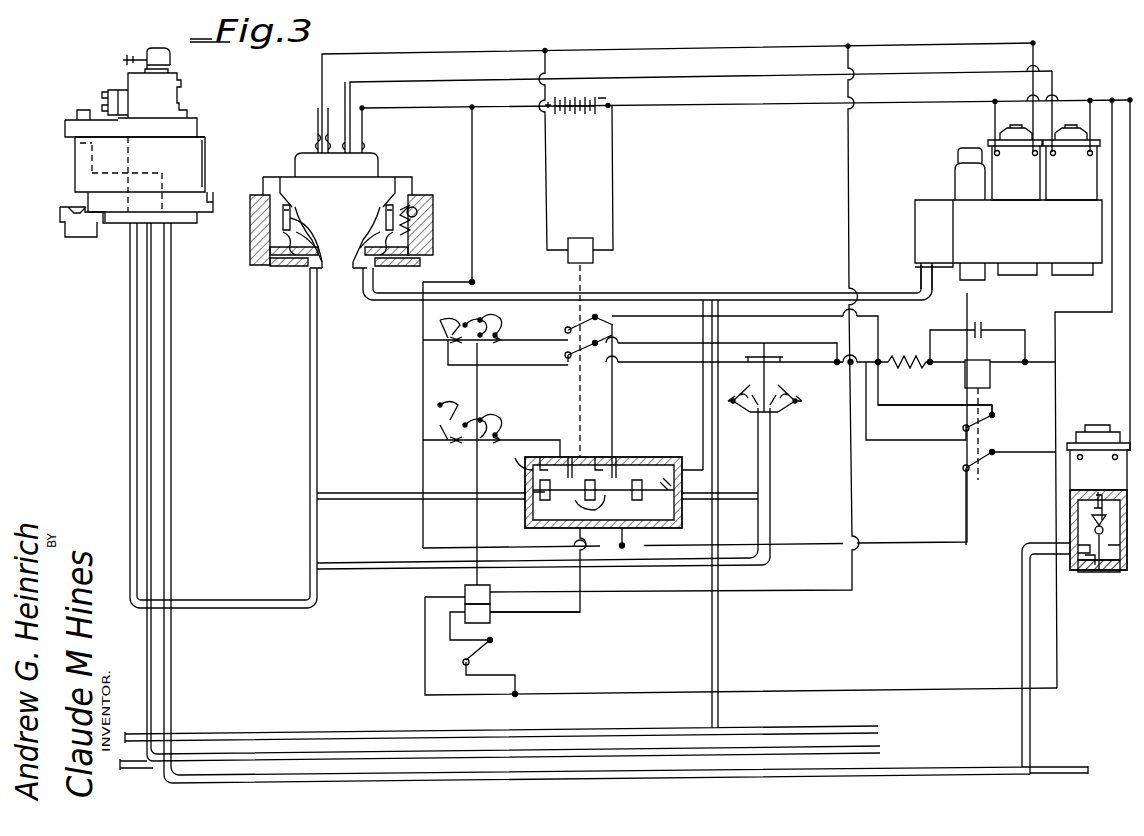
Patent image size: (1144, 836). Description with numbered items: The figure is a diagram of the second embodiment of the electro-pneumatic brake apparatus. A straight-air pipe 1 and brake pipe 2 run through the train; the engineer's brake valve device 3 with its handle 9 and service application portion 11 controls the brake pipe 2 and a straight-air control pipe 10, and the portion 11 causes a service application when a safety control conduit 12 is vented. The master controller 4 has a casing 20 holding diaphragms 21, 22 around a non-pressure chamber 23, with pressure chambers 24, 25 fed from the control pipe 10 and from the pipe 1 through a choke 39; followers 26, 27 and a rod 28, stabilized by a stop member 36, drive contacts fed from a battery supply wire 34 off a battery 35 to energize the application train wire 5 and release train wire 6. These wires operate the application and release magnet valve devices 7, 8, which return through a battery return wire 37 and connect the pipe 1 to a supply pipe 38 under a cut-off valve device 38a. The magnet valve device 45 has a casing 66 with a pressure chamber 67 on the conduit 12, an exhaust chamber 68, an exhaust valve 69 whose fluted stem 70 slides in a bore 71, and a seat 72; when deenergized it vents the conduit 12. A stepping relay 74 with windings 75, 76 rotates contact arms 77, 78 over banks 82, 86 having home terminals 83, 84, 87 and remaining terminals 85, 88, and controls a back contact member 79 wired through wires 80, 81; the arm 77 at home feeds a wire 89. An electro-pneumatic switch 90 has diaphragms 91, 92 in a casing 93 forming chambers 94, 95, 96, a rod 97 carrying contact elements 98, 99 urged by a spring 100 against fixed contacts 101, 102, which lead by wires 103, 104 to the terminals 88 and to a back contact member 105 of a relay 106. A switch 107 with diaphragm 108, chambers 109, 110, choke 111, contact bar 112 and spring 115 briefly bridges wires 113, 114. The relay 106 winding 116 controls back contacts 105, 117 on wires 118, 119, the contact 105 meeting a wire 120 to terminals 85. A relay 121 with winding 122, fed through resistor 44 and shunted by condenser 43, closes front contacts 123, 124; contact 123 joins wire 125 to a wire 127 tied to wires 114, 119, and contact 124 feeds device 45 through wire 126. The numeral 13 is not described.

The straight-air pipe 1 is at (700, 290).
The brake pipe 2 is at (147, 633).
The engineer's automatic brake valve device 3 is at (138, 153).
The electro-pneumatic master controller 4 is at (284, 164).
The application train wire 5 is at (545, 47).
The release train wire 6 is at (715, 78).
The application magnet valve device 7 is at (987, 131).
The release magnet valve device 8 is at (1112, 104).
The handle 9 is at (127, 58).
The straight-air control pipe 10 is at (310, 382).
The service application portion 11 is at (78, 136).
The safety control conduit 12 is at (172, 450).
The port 13 is at (1090, 568).
The sectionalized hollow casing 20 is at (405, 212).
The flexible diaphragm 21 is at (280, 252).
The flexible diaphragm 22 is at (430, 233).
The non-pressure chamber 23 is at (315, 246).
The pressure chamber 24 is at (262, 230).
The pressure chamber 25 is at (428, 248).
The follower 26 is at (296, 217).
The follower 27 is at (390, 215).
The rod 28 is at (318, 225).
The battery supply wire 34 is at (322, 116).
The battery 35 is at (580, 108).
The spring supported stop member 36 is at (420, 216).
The battery return wire 37 is at (612, 182).
The fluid pressure supply pipe 38 is at (918, 272).
The cut-off valve device 38a is at (948, 184).
The choke 39 is at (420, 260).
The condenser 43 is at (983, 325).
The resistor 44 is at (900, 356).
The magnet valve device 45 is at (1062, 482).
The sectionalized casing 66 is at (1102, 505).
The pressure chamber 67 is at (1125, 565).
The exhaust chamber 68 is at (1105, 520).
The exhaust valve 69 is at (1093, 528).
The fluted stem 70 is at (1099, 572).
The bore 71 is at (1085, 548).
The seat 72 is at (1094, 500).
The stepping relay 74 is at (445, 584).
The operate winding 75 is at (488, 590).
The operate winding 76 is at (490, 616).
The double-edged contact arm 77 is at (470, 370).
The double-edged contact arm 78 is at (468, 445).
The back contact member 79 is at (488, 655).
The wire 80 is at (575, 614).
The wire 81 is at (452, 640).
The bank 82 is at (500, 318).
The home terminal 83 is at (422, 343).
The adjacent terminal 84 is at (440, 322).
The remaining terminals 85 is at (461, 327).
The bank 86 is at (502, 432).
The home terminal 87 is at (438, 428).
The remaining terminals 88 is at (443, 405).
The wire 89 is at (515, 365).
The electro-pneumatic switch 90 is at (658, 435).
The flexible diaphragm 91 is at (506, 463).
The flexible diaphragm 92 is at (668, 462).
The hollow cylindrical casing 93 is at (676, 468).
The non-pressure chamber 94 is at (622, 548).
The pressure chamber 95 is at (530, 512).
The atmospheric chamber 96 is at (712, 500).
The rod 97 is at (591, 509).
The contact element 98 is at (592, 458).
The contact element 99 is at (628, 460).
The helical spring 100 is at (705, 478).
The non-yieldable contact element 101 is at (552, 457).
The non-yieldable contact element 102 is at (598, 457).
The wire 103 is at (550, 398).
The wire 104 is at (612, 385).
The back contact member 105 is at (570, 316).
The relay 106 is at (549, 355).
The switch 107 is at (800, 400).
The flexible diaphragm 108 is at (734, 415).
The pressure chamber 109 is at (772, 415).
The non-pressure chamber 110 is at (782, 395).
The choke 111 is at (770, 436).
The contact bar 112 is at (770, 352).
The wire 113 is at (680, 366).
The wire 114 is at (825, 345).
The helical spring 115 is at (760, 400).
The winding 116 is at (580, 240).
The back contact member 117 is at (604, 362).
The wire 118 is at (655, 314).
The wire 119 is at (680, 362).
The wire 120 is at (558, 355).
The relay 121 is at (1006, 429).
The winding 122 is at (978, 372).
The front contact member 123 is at (985, 420).
The front contact member 124 is at (962, 474).
The wire 125 is at (948, 405).
The wire 126 is at (1005, 450).
The wire 127 is at (890, 440).